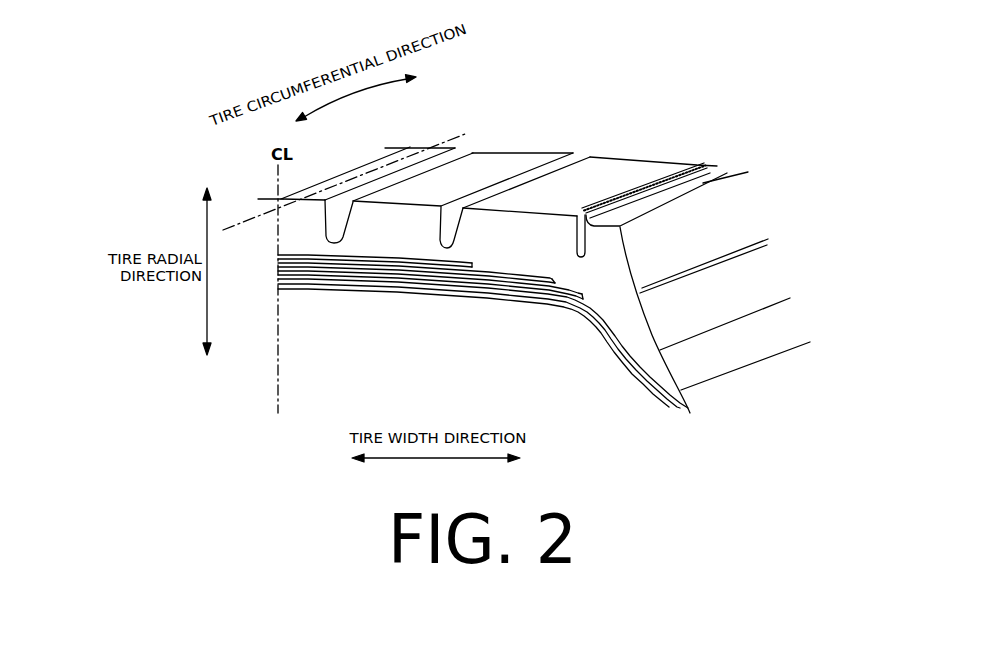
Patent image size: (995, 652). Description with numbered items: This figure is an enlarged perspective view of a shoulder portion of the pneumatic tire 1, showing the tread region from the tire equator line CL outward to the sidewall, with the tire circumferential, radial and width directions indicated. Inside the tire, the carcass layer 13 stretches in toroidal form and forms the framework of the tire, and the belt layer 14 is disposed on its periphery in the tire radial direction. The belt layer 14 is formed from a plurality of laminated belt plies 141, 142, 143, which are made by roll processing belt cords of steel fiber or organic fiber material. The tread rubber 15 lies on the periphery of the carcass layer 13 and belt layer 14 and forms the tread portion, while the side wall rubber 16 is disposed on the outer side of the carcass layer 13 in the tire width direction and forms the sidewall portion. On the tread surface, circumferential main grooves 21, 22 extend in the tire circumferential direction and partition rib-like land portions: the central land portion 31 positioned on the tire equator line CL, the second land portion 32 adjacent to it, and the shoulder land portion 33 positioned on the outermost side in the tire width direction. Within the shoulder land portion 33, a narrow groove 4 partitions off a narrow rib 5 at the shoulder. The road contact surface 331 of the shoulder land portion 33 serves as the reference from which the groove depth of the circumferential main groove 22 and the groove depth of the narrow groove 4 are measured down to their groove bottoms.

The pneumatic tire 1 is at (678, 104).
The narrow groove 4 is at (707, 167).
The narrow rib 5 is at (717, 177).
The carcass layer 13 is at (622, 353).
The belt layer 14 is at (430, 327).
The tread rubber 15 is at (287, 227).
The side wall rubber 16 is at (763, 343).
The circumferential main groove 21 is at (428, 163).
The circumferential main groove 22 is at (547, 168).
The central land portion 31 is at (403, 152).
The second land portion 32 is at (505, 153).
The shoulder land portion 33 is at (610, 167).
The road contact surface 331 is at (672, 168).
The belt ply 141 is at (532, 297).
The belt ply 142 is at (500, 278).
The belt ply 143 is at (467, 272).